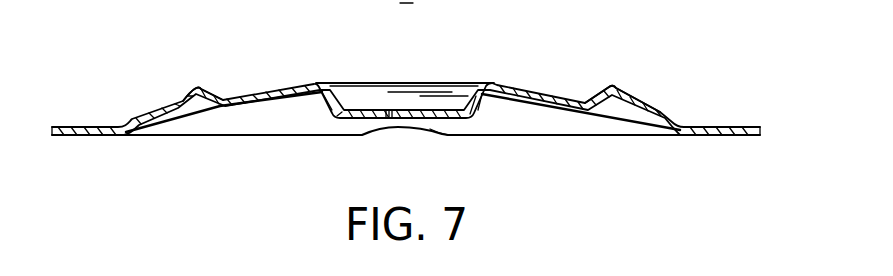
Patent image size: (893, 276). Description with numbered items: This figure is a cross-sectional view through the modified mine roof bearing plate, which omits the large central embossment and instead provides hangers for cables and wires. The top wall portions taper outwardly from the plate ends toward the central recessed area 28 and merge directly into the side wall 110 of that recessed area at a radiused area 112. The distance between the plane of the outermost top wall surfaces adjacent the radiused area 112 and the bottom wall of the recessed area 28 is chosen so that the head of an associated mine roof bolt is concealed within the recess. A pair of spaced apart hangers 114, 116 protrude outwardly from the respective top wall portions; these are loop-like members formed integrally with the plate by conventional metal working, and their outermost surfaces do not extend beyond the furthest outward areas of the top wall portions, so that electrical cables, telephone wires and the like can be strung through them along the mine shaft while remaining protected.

The hanger 114 is at (210, 87).
The hanger 116 is at (638, 98).
The radiused area 112 is at (340, 83).
The side wall 110 is at (345, 102).
The recessed area 28 is at (454, 94).